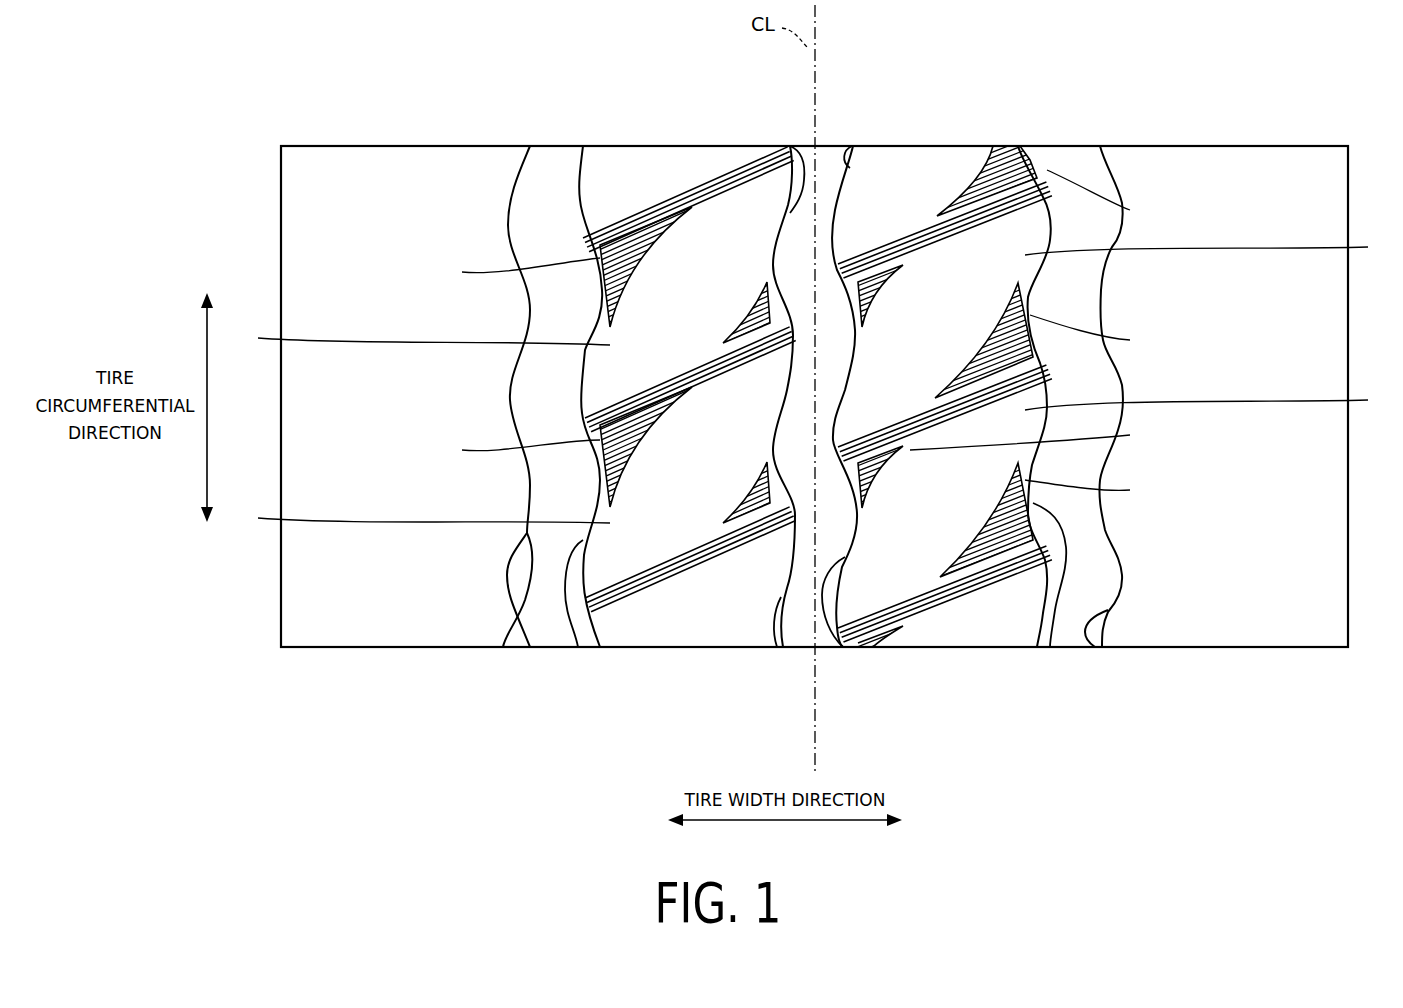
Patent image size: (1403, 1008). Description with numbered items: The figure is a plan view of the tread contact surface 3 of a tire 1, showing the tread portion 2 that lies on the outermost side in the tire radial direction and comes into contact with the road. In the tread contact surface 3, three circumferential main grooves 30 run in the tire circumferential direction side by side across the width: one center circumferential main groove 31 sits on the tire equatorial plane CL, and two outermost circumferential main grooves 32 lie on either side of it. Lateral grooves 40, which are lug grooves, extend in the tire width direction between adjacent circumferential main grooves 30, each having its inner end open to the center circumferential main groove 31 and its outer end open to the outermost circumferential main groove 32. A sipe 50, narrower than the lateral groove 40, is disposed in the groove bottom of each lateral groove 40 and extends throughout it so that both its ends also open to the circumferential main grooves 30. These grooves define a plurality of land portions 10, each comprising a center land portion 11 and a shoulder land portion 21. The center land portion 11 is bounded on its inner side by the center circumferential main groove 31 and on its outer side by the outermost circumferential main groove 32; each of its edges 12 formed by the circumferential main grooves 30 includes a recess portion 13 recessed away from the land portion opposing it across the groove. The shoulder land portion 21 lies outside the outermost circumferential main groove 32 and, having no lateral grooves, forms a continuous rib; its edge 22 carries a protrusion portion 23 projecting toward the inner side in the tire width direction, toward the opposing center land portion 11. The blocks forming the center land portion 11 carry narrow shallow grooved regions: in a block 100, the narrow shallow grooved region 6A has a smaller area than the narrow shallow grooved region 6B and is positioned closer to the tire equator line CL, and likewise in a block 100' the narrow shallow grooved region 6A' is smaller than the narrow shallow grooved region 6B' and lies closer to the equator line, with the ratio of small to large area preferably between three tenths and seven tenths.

The tire 1 is at (251, 82).
The tread portion 2 is at (814, 441).
The tread contact surface 3 is at (445, 636).
The land portion 10 is at (807, 416).
The center land portion 11 is at (848, 416).
The edge 12 is at (583, 147).
The recess portion 13 is at (578, 648).
The shoulder land portion 21 is at (807, 392).
The edge 22 is at (530, 147).
The protrusion portion 23 is at (505, 648).
The circumferential main groove 30 is at (815, 338).
The center circumferential main groove 31 is at (827, 147).
The outermost circumferential main groove 32 is at (1077, 147).
The lateral groove 40 is at (741, 147).
The sipe 50 is at (993, 147).
The narrow shallow grooved region 6A is at (1024, 386).
The narrow shallow grooved region 6A' is at (711, 403).
The narrow shallow grooved region 6B is at (1093, 336).
The narrow shallow grooved region 6B' is at (512, 359).
The block 100 is at (1214, 321).
The block 100' is at (410, 427).